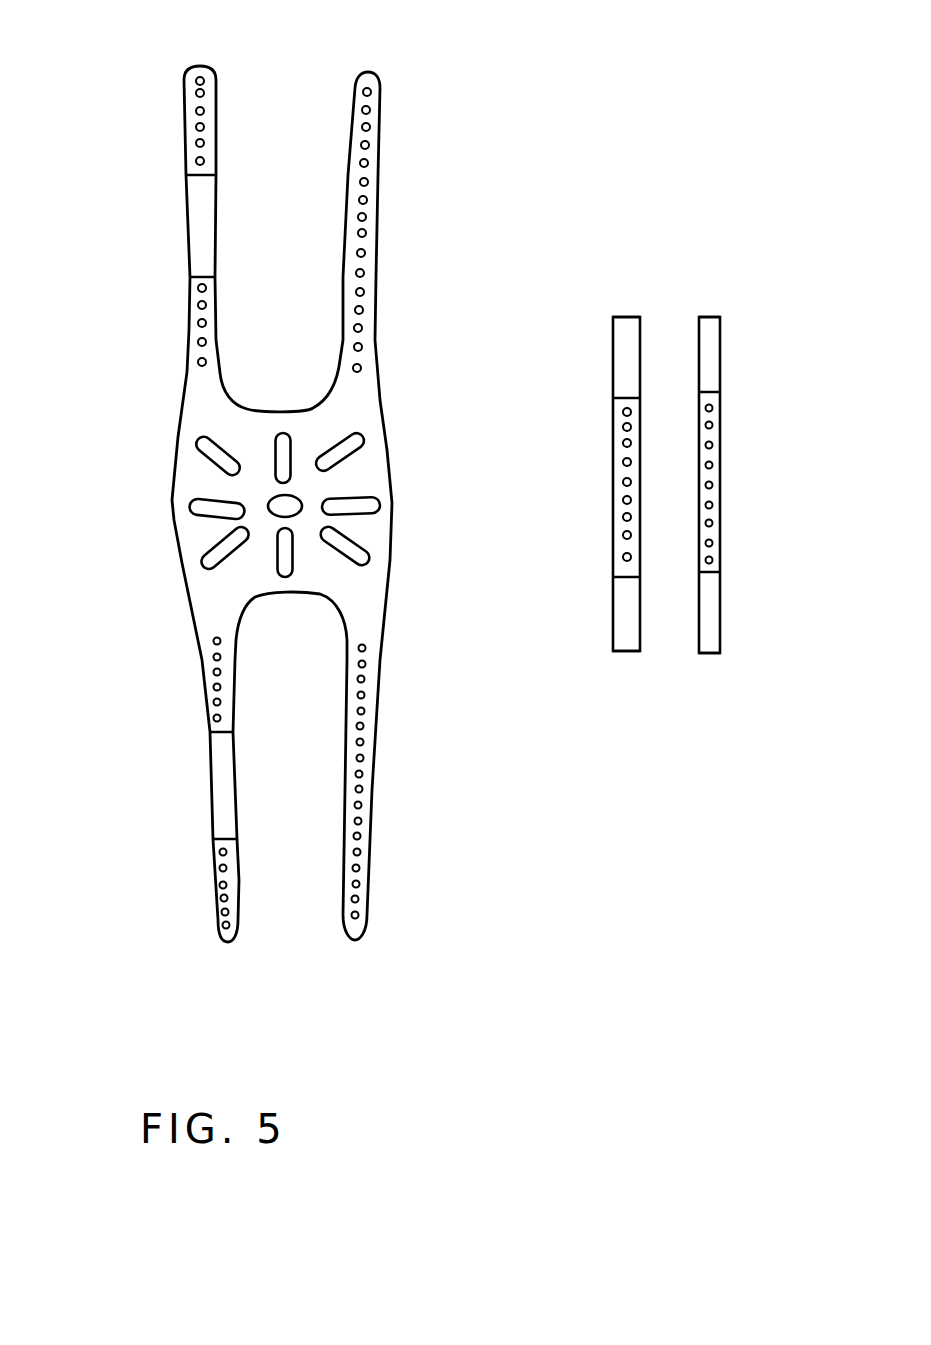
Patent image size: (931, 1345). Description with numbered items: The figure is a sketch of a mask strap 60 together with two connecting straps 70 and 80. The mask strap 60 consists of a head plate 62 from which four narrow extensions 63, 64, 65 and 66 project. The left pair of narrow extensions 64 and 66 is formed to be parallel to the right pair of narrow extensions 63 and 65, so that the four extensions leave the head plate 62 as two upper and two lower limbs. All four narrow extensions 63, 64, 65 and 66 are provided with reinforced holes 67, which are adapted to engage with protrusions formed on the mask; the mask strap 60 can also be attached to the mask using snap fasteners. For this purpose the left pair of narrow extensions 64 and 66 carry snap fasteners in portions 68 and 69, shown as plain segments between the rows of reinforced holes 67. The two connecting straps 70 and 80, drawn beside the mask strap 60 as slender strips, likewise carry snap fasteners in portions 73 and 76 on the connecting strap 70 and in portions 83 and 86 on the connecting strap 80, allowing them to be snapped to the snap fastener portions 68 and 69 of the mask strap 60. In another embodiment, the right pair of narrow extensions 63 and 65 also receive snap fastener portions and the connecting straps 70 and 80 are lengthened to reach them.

The mask strap 60 is at (172, 498).
The head plate 62 is at (360, 475).
The narrow extension 63 is at (370, 80).
The narrow extension 64 is at (200, 70).
The narrow extension 65 is at (358, 935).
The narrow extension 66 is at (230, 935).
The reinforced holes 67 is at (362, 712).
The snap fastener portion 68 is at (200, 228).
The snap fastener portion 69 is at (218, 797).
The connecting strap 70 is at (623, 317).
The snap fastener portion 73 is at (625, 372).
The snap fastener portion 76 is at (625, 617).
The connecting strap 80 is at (710, 317).
The snap fastener portion 83 is at (708, 365).
The snap fastener portion 86 is at (712, 613).